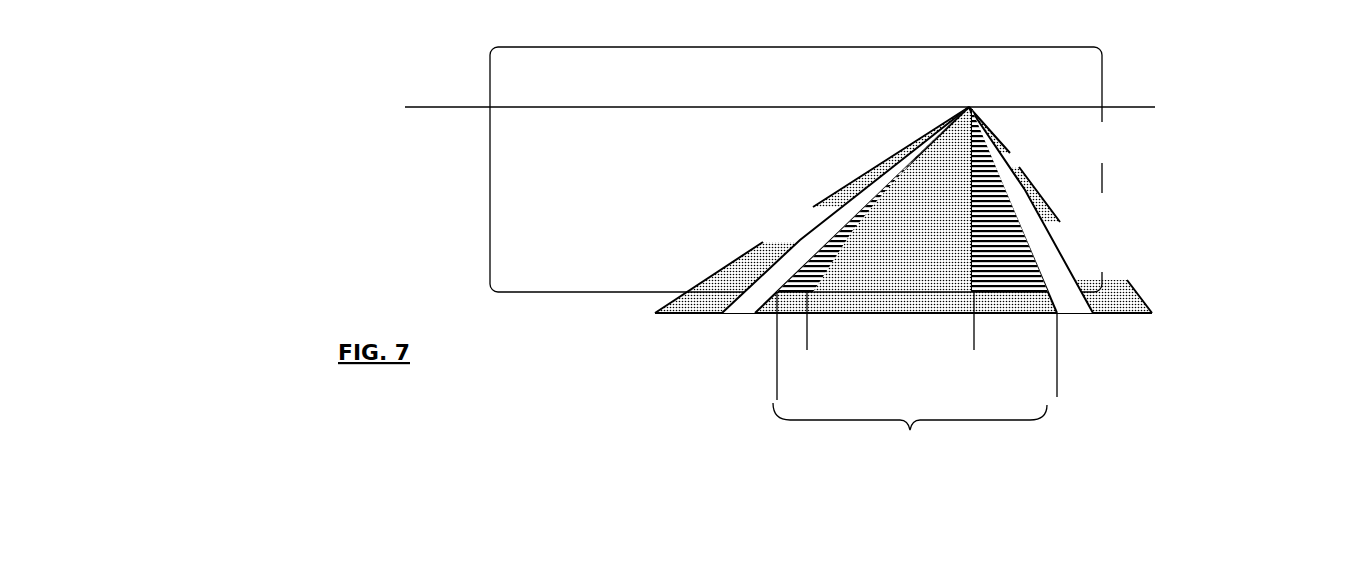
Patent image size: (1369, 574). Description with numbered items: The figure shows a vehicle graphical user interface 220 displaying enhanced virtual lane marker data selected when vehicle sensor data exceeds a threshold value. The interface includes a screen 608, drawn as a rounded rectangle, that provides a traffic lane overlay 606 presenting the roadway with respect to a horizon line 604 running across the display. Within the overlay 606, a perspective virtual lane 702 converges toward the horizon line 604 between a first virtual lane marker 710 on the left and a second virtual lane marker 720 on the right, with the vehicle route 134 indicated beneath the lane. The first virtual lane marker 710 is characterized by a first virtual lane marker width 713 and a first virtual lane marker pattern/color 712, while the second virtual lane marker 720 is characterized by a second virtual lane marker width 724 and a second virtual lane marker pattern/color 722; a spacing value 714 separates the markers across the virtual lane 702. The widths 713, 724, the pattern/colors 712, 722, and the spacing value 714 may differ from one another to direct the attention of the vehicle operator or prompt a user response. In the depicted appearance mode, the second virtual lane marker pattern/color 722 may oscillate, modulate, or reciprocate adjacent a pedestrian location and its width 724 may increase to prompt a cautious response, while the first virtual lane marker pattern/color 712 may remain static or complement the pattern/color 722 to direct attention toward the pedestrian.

The screen 608 is at (538, 47).
The horizon line 604 is at (1128, 107).
The traffic lane overlay 606 is at (830, 210).
The virtual lane 702 is at (906, 210).
The first virtual lane marker 710 is at (810, 210).
The first virtual lane marker pattern/color 712 is at (883, 183).
The first virtual lane marker width 713 is at (769, 341).
The spacing value 714 is at (966, 343).
The second virtual lane marker 720 is at (1149, 210).
The second virtual lane marker pattern/color 722 is at (1010, 183).
The second virtual lane marker width 724 is at (1066, 341).
The vehicle route 134 is at (910, 428).
The vehicle graphical user interface 220 is at (694, 212).